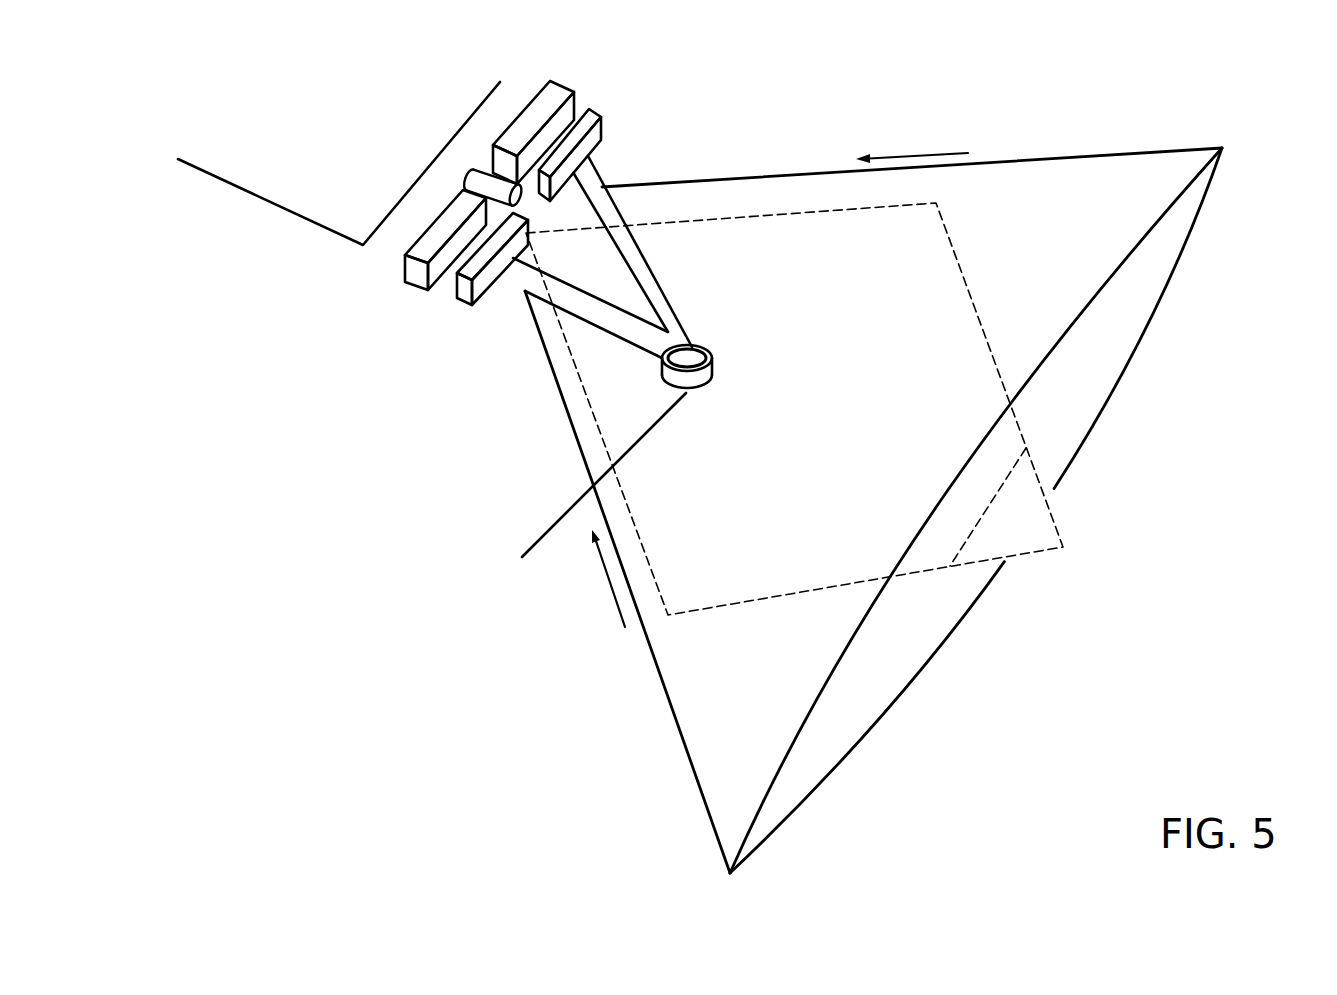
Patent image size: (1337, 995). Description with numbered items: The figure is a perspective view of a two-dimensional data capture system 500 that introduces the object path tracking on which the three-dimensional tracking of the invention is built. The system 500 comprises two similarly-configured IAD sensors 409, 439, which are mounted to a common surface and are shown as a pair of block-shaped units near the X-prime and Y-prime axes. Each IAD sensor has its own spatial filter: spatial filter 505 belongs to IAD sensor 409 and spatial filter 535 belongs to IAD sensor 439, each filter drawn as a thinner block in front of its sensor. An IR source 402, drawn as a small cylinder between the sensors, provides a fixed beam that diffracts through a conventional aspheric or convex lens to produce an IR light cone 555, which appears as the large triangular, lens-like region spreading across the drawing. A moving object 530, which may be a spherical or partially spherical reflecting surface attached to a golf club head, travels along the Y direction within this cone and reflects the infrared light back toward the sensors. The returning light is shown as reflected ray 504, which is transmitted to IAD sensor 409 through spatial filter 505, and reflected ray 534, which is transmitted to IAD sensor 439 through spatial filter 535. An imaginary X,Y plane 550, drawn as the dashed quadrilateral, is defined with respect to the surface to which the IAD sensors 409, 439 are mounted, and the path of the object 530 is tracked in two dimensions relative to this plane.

The 2D data capture system 500 is at (482, 749).
The IR source 402 is at (478, 168).
The IAD sensor 439 is at (566, 78).
The spatial filter 535 is at (602, 135).
The reflected ray 534 is at (643, 257).
The IAD sensor 409 is at (417, 270).
The spatial filter 505 is at (480, 303).
The reflected ray 504 is at (593, 326).
The moving object 530 is at (577, 484).
The IR light cone 555 is at (1130, 318).
The imaginary X,Y plane 550 is at (995, 508).